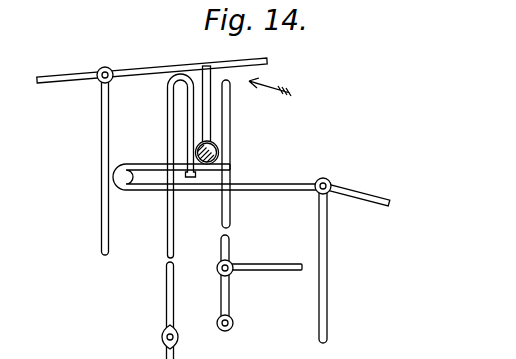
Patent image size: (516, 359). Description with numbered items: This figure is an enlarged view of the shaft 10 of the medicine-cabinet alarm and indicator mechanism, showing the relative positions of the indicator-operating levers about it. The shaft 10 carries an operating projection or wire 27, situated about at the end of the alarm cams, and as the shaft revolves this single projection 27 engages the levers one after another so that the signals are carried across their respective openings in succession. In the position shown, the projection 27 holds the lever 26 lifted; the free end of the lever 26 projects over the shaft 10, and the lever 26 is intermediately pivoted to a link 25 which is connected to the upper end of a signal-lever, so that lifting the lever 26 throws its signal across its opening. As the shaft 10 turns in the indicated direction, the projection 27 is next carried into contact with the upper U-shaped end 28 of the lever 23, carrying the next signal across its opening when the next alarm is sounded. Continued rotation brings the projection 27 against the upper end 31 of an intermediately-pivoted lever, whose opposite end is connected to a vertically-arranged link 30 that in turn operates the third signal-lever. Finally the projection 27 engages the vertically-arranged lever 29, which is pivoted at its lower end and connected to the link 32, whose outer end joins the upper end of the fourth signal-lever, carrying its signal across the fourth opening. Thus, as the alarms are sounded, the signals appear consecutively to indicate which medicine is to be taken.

The shaft 10 is at (218, 157).
The lever 23 is at (170, 278).
The link 25 is at (100, 133).
The lever 26 is at (146, 77).
The operating projection 27 is at (207, 120).
The upper U-shaped end 28 is at (162, 127).
The vertically-arranged lever 29 is at (229, 228).
The vertically-arranged link 30 is at (323, 242).
The upper end of intermediately-pivoted lever 31 is at (150, 184).
The link 32 is at (277, 270).